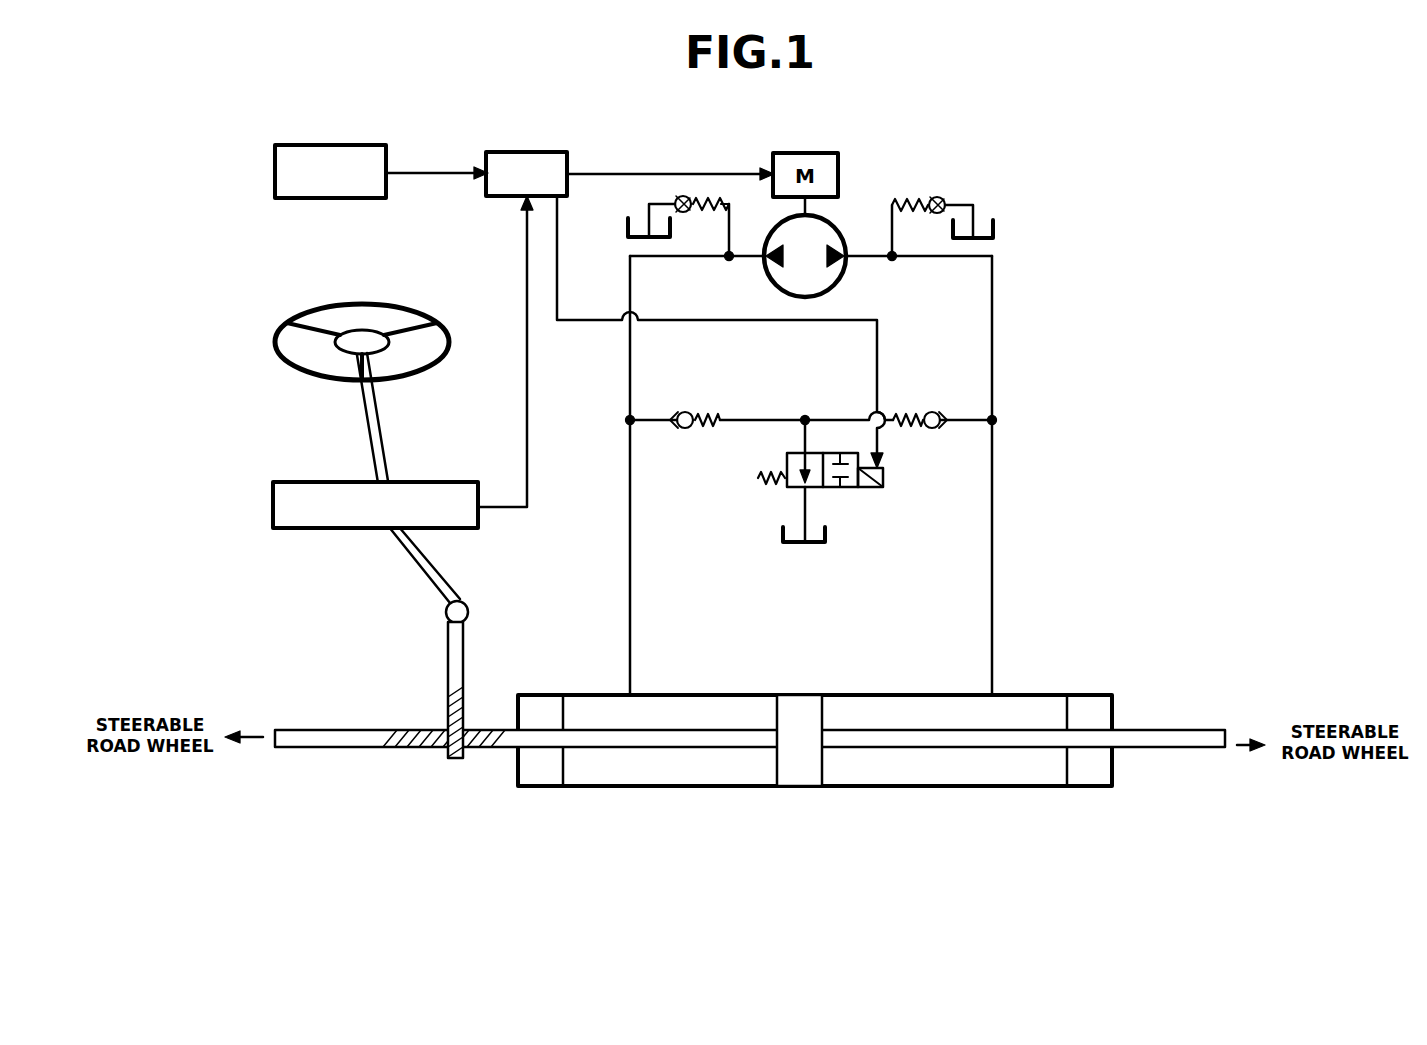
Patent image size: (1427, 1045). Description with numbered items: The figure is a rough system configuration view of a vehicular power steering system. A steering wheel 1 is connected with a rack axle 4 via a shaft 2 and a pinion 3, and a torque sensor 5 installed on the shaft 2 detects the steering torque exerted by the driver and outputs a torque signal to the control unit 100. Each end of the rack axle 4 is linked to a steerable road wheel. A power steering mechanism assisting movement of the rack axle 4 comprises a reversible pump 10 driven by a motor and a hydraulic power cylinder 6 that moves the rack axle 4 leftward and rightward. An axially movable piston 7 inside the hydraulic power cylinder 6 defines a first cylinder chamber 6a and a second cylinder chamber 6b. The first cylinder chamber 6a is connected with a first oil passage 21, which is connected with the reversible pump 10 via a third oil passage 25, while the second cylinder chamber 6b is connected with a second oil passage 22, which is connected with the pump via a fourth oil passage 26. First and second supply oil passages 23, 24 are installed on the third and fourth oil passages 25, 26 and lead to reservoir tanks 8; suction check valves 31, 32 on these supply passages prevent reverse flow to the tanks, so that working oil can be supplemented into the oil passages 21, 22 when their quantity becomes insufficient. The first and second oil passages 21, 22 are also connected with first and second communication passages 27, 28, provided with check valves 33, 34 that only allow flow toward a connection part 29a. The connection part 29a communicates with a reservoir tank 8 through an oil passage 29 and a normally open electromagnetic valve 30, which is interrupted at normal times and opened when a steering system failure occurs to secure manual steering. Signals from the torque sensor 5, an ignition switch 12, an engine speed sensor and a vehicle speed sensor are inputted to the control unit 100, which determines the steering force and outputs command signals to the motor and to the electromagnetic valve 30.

The steering wheel 1 is at (420, 310).
The shaft 2 is at (388, 418).
The pinion 3 is at (445, 710).
The rack axle 4 is at (318, 750).
The torque sensor 5 is at (343, 530).
The hydraulic power cylinder 6 is at (608, 788).
The first cylinder chamber 6a is at (710, 788).
The second cylinder chamber 6b is at (985, 788).
The piston 7 is at (800, 788).
The reservoir tank 8 is at (628, 228).
The reversible pump 10 is at (848, 272).
The ignition switch 12 is at (330, 145).
The first oil passage 21 is at (630, 588).
The second oil passage 22 is at (995, 568).
The first supply oil passage 23 is at (733, 225).
The second supply oil passage 24 is at (892, 222).
The third oil passage 25 is at (700, 258).
The fourth oil passage 26 is at (952, 258).
The first communication passage 27 is at (768, 417).
The second communication passage 28 is at (968, 430).
The oil passage 29 is at (800, 435).
The connection part 29a is at (808, 416).
The normally open electromagnetic valve 30 is at (865, 490).
The suction check valve 31 is at (683, 196).
The suction check valve 32 is at (942, 198).
The check valve 33 is at (685, 430).
The check valve 34 is at (925, 412).
The control unit 100 is at (540, 152).